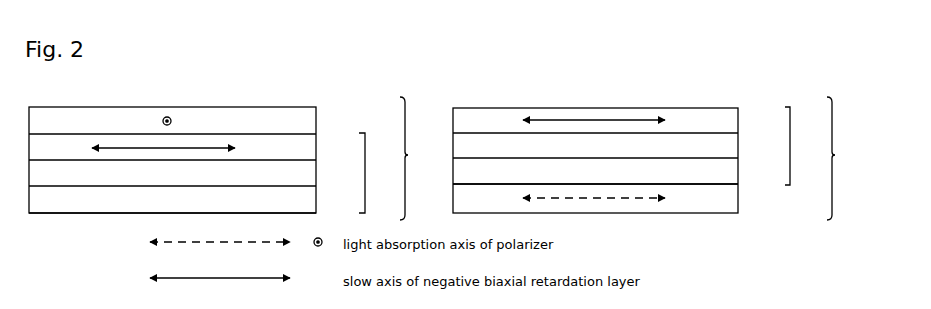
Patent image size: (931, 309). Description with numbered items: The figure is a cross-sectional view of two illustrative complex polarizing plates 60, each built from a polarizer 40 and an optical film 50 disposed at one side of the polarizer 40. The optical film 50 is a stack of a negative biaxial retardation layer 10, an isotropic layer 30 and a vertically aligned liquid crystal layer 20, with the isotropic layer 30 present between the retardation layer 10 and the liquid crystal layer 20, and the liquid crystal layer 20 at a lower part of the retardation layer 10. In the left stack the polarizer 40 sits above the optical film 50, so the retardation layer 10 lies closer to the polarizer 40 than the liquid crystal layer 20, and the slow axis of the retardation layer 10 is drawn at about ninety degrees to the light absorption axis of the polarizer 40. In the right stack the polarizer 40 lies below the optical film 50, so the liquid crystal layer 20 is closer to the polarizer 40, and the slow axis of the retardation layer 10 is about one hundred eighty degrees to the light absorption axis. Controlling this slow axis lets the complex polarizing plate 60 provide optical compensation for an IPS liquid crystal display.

The retardation layer 10 is at (318, 140).
The liquid crystal layer 20 is at (318, 202).
The isotropic layer 30 is at (318, 174).
The polarizer 40 is at (318, 108).
The optical film 50 is at (365, 173).
The complex polarizing plate 60 is at (631, 158).